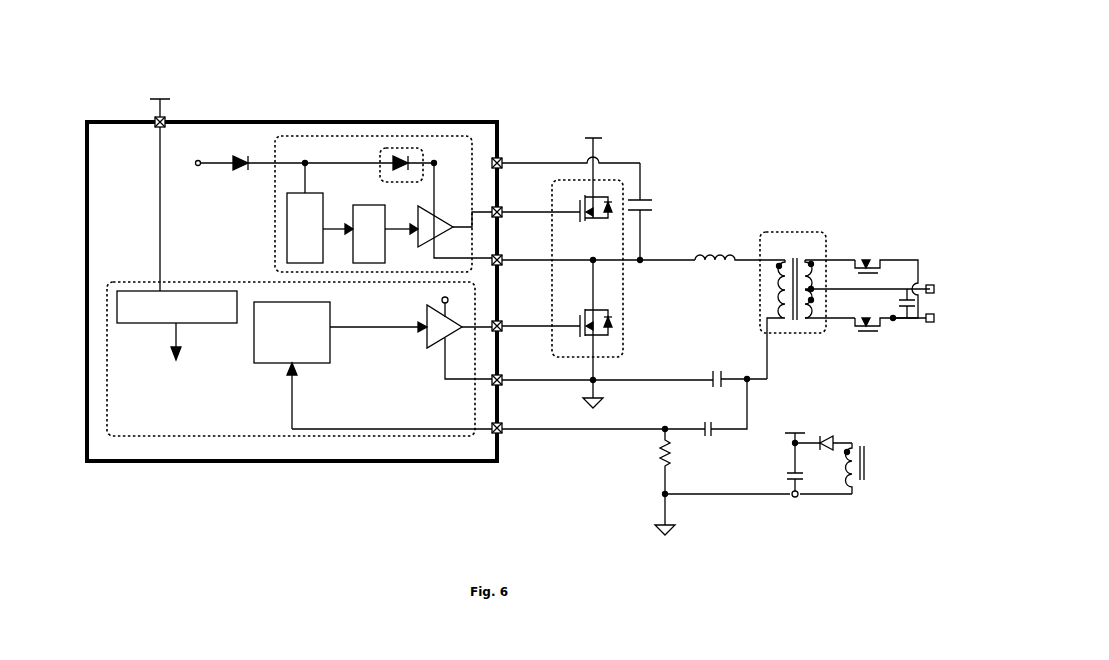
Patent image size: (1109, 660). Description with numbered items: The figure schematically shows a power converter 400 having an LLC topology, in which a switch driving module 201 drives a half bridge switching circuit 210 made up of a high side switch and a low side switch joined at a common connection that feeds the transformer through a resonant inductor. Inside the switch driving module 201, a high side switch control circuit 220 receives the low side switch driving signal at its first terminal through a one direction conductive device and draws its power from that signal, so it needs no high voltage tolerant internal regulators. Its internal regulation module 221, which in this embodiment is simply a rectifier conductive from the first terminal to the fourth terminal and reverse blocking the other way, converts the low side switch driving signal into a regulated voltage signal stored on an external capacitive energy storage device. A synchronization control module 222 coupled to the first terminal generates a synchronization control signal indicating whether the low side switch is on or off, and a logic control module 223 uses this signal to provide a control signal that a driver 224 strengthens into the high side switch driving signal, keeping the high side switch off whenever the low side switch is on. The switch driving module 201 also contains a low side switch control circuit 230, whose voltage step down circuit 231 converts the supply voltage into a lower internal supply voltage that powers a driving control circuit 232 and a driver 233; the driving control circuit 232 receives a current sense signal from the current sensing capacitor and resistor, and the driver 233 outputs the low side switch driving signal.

The power converter 400 is at (748, 79).
The switch driving module 201 is at (87, 122).
The half bridge switching circuit 210 is at (623, 304).
The high side switch control circuit 220 is at (275, 245).
The internal regulation module 221 is at (380, 160).
The synchronization control module 222 is at (323, 200).
The logic control module 223 is at (375, 215).
The driver 224 is at (422, 242).
The low side switch control circuit 230 is at (140, 282).
The voltage step down circuit 231 is at (146, 323).
The driving control circuit 232 is at (268, 363).
The driver 233 is at (426, 340).